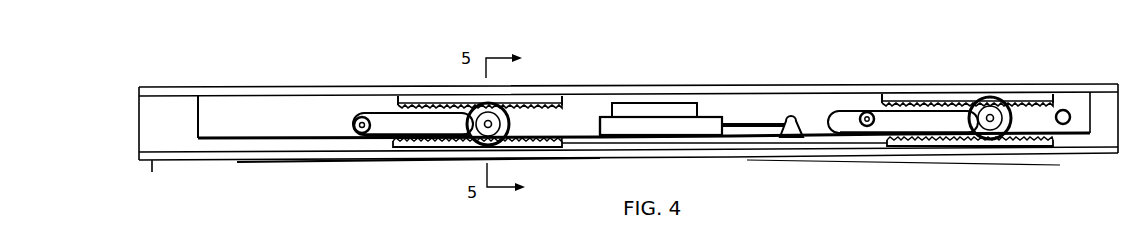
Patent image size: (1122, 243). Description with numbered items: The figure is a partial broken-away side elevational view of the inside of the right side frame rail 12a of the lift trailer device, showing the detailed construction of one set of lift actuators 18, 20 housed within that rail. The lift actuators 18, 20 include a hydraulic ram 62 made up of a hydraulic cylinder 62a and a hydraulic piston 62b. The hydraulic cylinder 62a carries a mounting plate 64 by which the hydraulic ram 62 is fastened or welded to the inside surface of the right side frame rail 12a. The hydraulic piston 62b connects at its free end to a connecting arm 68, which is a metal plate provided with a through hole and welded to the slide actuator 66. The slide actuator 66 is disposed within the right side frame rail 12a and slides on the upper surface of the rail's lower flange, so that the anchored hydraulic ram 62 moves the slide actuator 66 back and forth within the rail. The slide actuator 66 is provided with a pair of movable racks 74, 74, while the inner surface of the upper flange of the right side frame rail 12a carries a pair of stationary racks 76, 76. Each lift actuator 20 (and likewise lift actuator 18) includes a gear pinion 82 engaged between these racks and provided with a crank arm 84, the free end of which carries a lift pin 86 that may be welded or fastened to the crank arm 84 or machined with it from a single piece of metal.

The right side frame rail 12a is at (277, 123).
The lift actuator 18 is at (391, 80).
The lift actuator 20 is at (911, 74).
The hydraulic ram 62 is at (662, 106).
The hydraulic cylinder 62a is at (628, 127).
The hydraulic piston 62b is at (755, 122).
The mounting plate 64 is at (678, 108).
The slide actuator 66 is at (750, 161).
The connecting arm 68 is at (797, 117).
The movable rack 74 is at (536, 157).
The stationary rack 76 is at (428, 96).
The gear pinion 82 is at (470, 128).
The crank arm 84 is at (410, 125).
The lift pin 86 is at (363, 128).